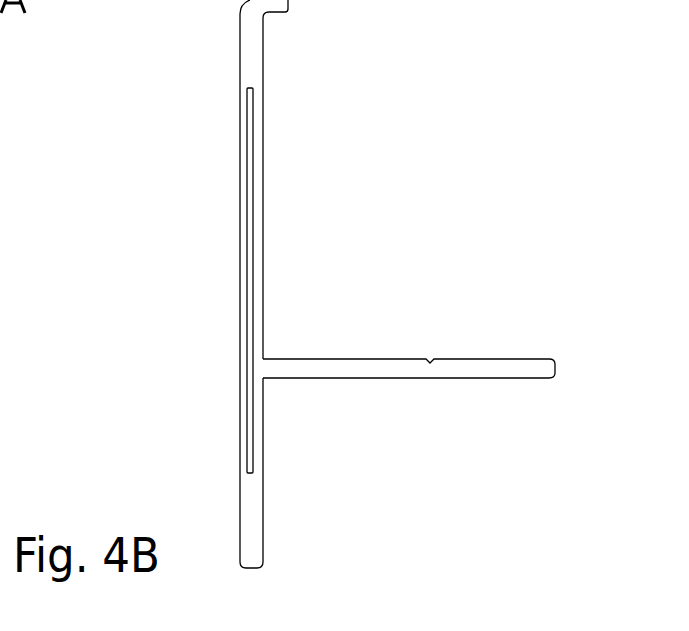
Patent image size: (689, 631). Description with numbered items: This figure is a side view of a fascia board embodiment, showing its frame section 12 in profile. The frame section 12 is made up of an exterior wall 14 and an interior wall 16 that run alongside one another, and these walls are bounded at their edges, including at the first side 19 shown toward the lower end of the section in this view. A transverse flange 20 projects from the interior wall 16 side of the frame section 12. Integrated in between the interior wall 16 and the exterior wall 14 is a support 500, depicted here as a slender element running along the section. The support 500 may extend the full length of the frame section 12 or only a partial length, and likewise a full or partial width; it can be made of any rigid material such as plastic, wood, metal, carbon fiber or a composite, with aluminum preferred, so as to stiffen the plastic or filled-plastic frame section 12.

The frame section 12 is at (240, 40).
The exterior wall 14 is at (229, 238).
The interior wall 16 is at (281, 186).
The first side 19 is at (258, 528).
The transverse flange 20 is at (493, 359).
The support 500 is at (250, 321).